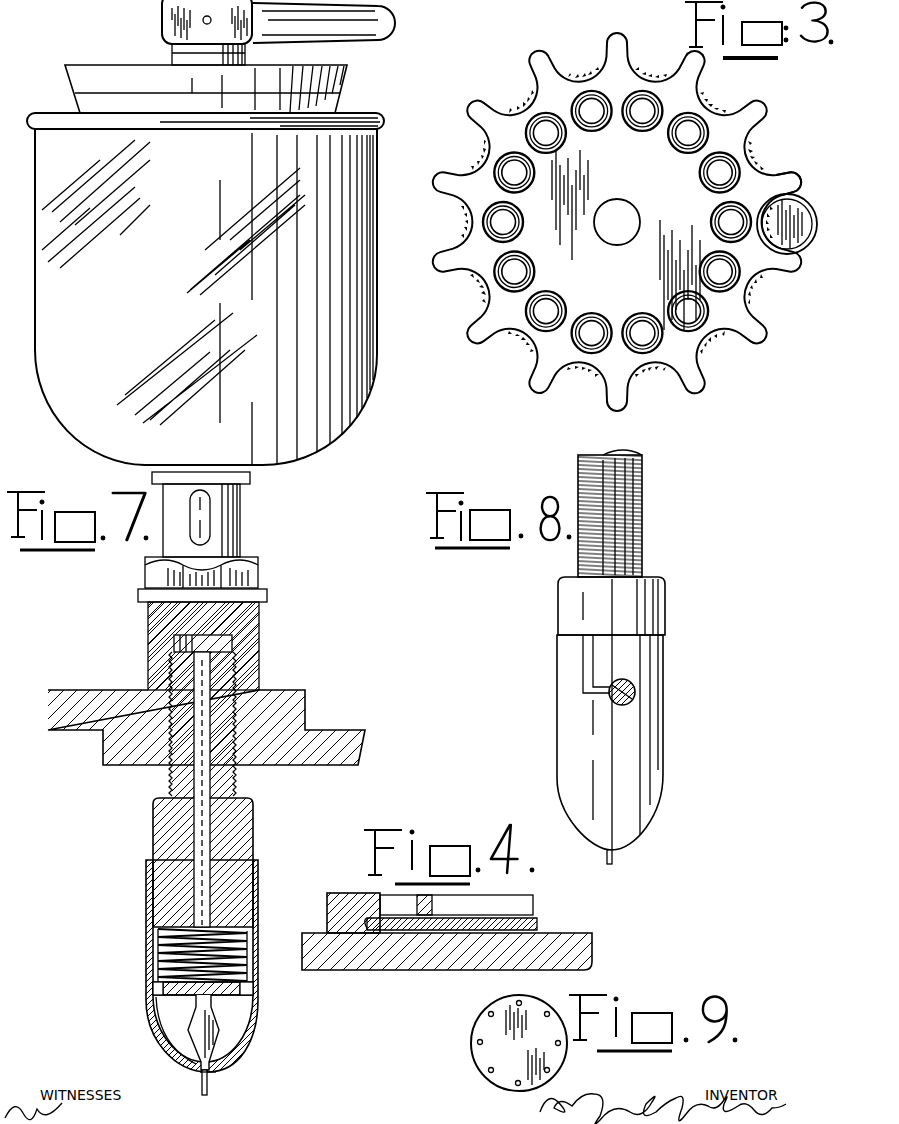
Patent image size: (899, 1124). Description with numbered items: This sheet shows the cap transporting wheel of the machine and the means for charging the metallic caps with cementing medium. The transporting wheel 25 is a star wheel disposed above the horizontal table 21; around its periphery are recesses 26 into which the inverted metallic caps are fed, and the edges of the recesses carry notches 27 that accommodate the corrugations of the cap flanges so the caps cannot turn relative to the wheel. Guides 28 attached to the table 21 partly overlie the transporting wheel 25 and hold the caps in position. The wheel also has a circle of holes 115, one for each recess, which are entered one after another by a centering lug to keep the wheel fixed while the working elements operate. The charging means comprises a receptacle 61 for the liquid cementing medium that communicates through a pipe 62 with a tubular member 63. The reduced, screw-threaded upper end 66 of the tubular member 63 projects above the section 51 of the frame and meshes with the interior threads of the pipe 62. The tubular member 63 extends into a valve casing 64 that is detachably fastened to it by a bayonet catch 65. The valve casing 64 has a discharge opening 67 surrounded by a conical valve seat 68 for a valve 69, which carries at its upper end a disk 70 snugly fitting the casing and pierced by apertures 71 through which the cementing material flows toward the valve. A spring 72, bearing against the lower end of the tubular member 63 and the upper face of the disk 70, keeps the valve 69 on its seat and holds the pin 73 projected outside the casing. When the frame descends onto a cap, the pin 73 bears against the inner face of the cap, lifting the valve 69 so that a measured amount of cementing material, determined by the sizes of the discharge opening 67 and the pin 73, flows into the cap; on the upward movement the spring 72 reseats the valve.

In FIG. 4, the horizontal table 21 is at (566, 946).
In FIG. 3, the transporting wheel 25 is at (625, 222).
In FIG. 4, the transporting wheel 25 is at (537, 926).
In FIG. 3, the recesses 26 is at (767, 164).
In FIG. 3, the notches 27 is at (749, 283).
In FIG. 4, the guides 28 is at (345, 893).
In FIG. 7, the section of the frame 51 is at (290, 702).
In FIG. 7, the receptacle 61 is at (360, 330).
In FIG. 7, the pipe 62 is at (236, 524).
In FIG. 7, the tubular member 63 is at (243, 822).
In FIG. 8, the tubular member 63 is at (660, 601).
In FIG. 7, the valve casing 64 is at (258, 906).
In FIG. 8, the valve casing 64 is at (652, 719).
In FIG. 8, the bayonet catch 65 is at (596, 691).
In FIG. 7, the upper end of the tubular member 66 is at (172, 781).
In FIG. 8, the upper end of the tubular member 66 is at (644, 531).
In FIG. 7, the discharge opening 67 is at (212, 1073).
In FIG. 7, the conical valve seat 68 is at (222, 1062).
In FIG. 7, the valve 69 is at (200, 1044).
In FIG. 7, the disk 70 is at (153, 989).
In FIG. 9, the disk 70 is at (488, 1054).
In FIG. 7, the apertures 71 is at (253, 987).
In FIG. 9, the apertures 71 is at (478, 1040).
In FIG. 7, the spring 72 is at (158, 953).
In FIG. 7, the pin 73 is at (202, 1092).
In FIG. 8, the pin 73 is at (613, 853).
In FIG. 3, the holes 115 is at (712, 218).